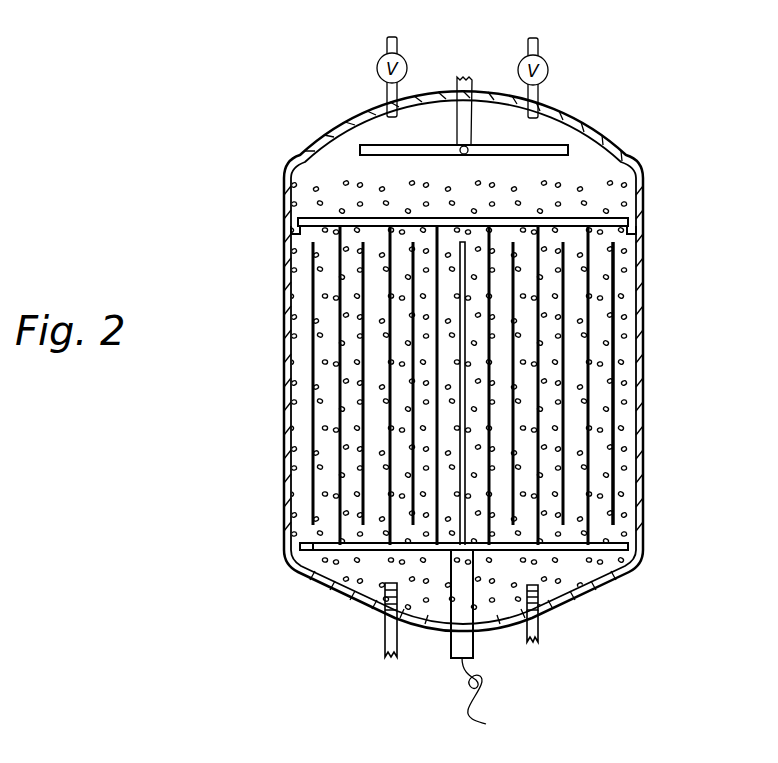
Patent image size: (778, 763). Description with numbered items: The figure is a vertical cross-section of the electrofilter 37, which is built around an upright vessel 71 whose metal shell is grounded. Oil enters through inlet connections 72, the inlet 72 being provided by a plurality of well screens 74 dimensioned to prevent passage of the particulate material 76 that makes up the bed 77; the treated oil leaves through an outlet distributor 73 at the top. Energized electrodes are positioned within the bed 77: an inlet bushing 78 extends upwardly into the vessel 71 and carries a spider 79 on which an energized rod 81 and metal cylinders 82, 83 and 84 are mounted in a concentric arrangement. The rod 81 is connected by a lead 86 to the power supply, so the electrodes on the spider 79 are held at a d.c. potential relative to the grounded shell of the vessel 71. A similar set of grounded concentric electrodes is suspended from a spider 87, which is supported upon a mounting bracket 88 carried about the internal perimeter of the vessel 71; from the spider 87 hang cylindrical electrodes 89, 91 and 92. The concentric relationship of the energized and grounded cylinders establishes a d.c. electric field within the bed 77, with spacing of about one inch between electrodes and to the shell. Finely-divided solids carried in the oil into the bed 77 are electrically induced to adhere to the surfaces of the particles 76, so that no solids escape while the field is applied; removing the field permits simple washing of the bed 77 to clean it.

The electrofilter 37 is at (429, 361).
The upright vessel 71 is at (283, 500).
The inlet connections 72 is at (540, 636).
The outlet distributor 73 is at (467, 77).
The well screens 74 is at (543, 600).
The material 76 is at (328, 192).
The bed 77 is at (600, 271).
The inlet bushing 78 is at (450, 646).
The spider 79 is at (597, 556).
The energized rod 81 is at (460, 334).
The metal cylinder 82 is at (513, 396).
The metal cylinder 83 is at (565, 441).
The metal cylinder 84 is at (614, 461).
The lead 86 is at (487, 702).
The spider 87 is at (607, 222).
The mounting bracket 88 is at (643, 227).
The cylindrical electrode 89 is at (437, 303).
The cylindrical electrode 91 is at (390, 281).
The cylindrical electrode 92 is at (340, 262).